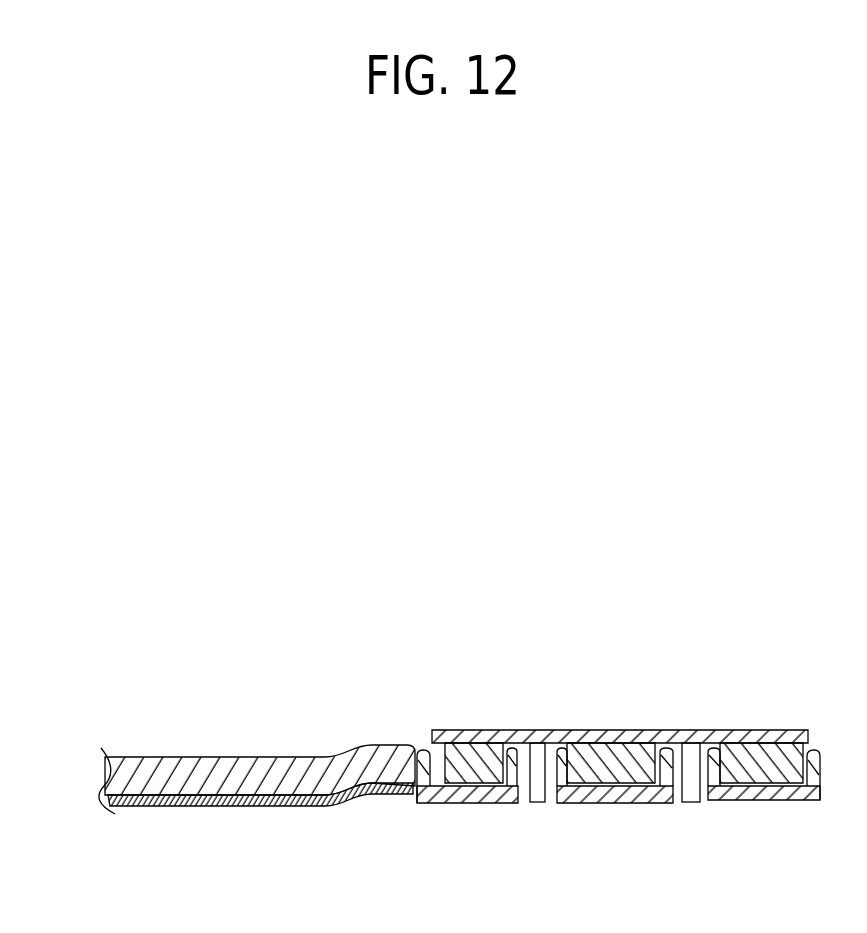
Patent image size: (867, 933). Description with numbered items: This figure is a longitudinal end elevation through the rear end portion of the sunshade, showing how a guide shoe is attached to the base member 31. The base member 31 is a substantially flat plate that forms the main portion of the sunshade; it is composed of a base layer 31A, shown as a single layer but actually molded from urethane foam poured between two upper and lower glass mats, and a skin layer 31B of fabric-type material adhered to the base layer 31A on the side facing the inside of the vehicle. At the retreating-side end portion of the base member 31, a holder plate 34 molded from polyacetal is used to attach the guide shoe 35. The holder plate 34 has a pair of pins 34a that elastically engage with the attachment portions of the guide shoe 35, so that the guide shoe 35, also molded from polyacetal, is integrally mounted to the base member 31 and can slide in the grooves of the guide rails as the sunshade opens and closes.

The base member 31 is at (221, 785).
The base layer 31A is at (281, 766).
The skin layer 31B is at (245, 801).
The holder plate 34 is at (617, 730).
The pin 34a is at (661, 802).
The guide shoe 35 is at (770, 793).